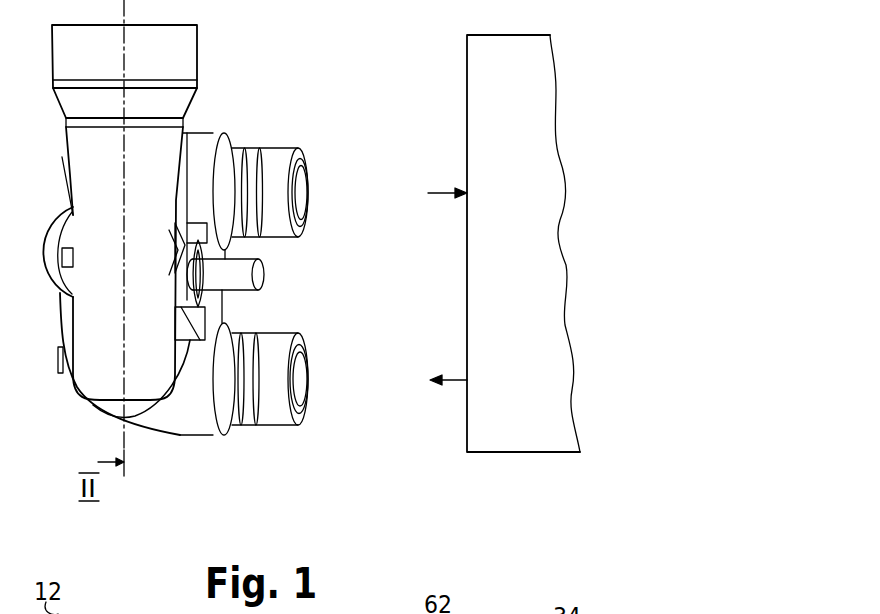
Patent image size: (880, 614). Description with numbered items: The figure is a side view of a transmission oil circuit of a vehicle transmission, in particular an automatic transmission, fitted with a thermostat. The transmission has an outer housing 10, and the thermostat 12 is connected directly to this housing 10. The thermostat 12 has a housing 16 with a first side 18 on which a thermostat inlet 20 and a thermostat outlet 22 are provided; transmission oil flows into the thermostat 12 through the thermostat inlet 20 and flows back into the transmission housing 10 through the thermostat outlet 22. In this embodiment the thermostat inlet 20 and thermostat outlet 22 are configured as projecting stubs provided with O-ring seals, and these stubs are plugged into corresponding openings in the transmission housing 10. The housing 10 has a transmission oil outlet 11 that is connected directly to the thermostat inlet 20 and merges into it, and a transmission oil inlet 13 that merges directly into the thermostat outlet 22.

The transmission housing 10 is at (538, 416).
The transmission oil outlet 11 is at (464, 380).
The thermostat 12 is at (208, 284).
The transmission oil inlet 13 is at (447, 193).
The housing 16 is at (165, 420).
The first side 18 is at (232, 303).
The thermostat inlet 20 is at (298, 400).
The thermostat outlet 22 is at (310, 172).